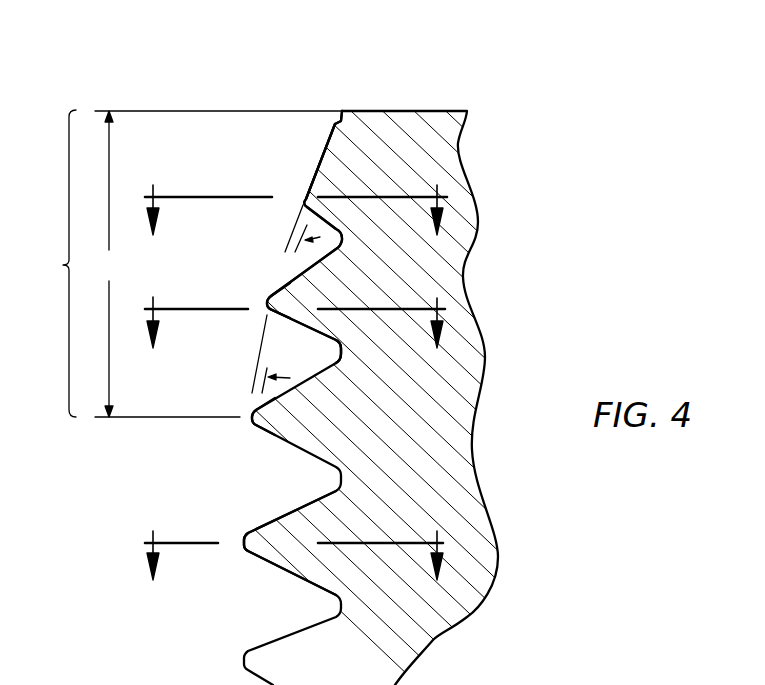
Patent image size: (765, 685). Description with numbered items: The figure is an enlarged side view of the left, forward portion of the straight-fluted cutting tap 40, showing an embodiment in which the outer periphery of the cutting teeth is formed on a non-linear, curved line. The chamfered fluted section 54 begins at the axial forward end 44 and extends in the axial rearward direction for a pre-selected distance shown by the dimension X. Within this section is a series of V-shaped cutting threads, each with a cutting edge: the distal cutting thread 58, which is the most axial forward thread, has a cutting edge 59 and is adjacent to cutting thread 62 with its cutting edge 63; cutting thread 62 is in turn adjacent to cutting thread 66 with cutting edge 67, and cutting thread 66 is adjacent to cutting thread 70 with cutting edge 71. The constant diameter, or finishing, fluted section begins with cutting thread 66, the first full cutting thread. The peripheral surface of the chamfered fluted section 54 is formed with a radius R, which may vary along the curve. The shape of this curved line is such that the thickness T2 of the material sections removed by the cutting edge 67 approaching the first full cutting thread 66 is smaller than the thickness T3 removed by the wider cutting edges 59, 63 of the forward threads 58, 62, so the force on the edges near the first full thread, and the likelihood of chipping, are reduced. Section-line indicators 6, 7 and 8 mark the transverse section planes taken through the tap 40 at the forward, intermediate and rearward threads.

The straight-fluted cutting tap 40 is at (183, 56).
The axial forward end 44 is at (402, 109).
The chamfered fluted section 54 is at (189, 263).
The distal cutting thread 58 is at (347, 157).
The cutting edge 59 is at (310, 178).
The cutting thread 62 is at (297, 282).
The cutting edge 63 is at (267, 300).
The cutting thread 66 is at (253, 412).
The cutting edge 67 is at (252, 418).
The cutting thread 70 is at (275, 540).
The cutting edge 71 is at (243, 540).
The dimension X is at (218, 264).
The thickness T2 is at (250, 368).
The thickness T3 is at (291, 234).
The radius R is at (266, 344).
The section line 6- 6 is at (296, 195).
The section line 7- 7 is at (296, 308).
The section line 8- 8 is at (296, 539).